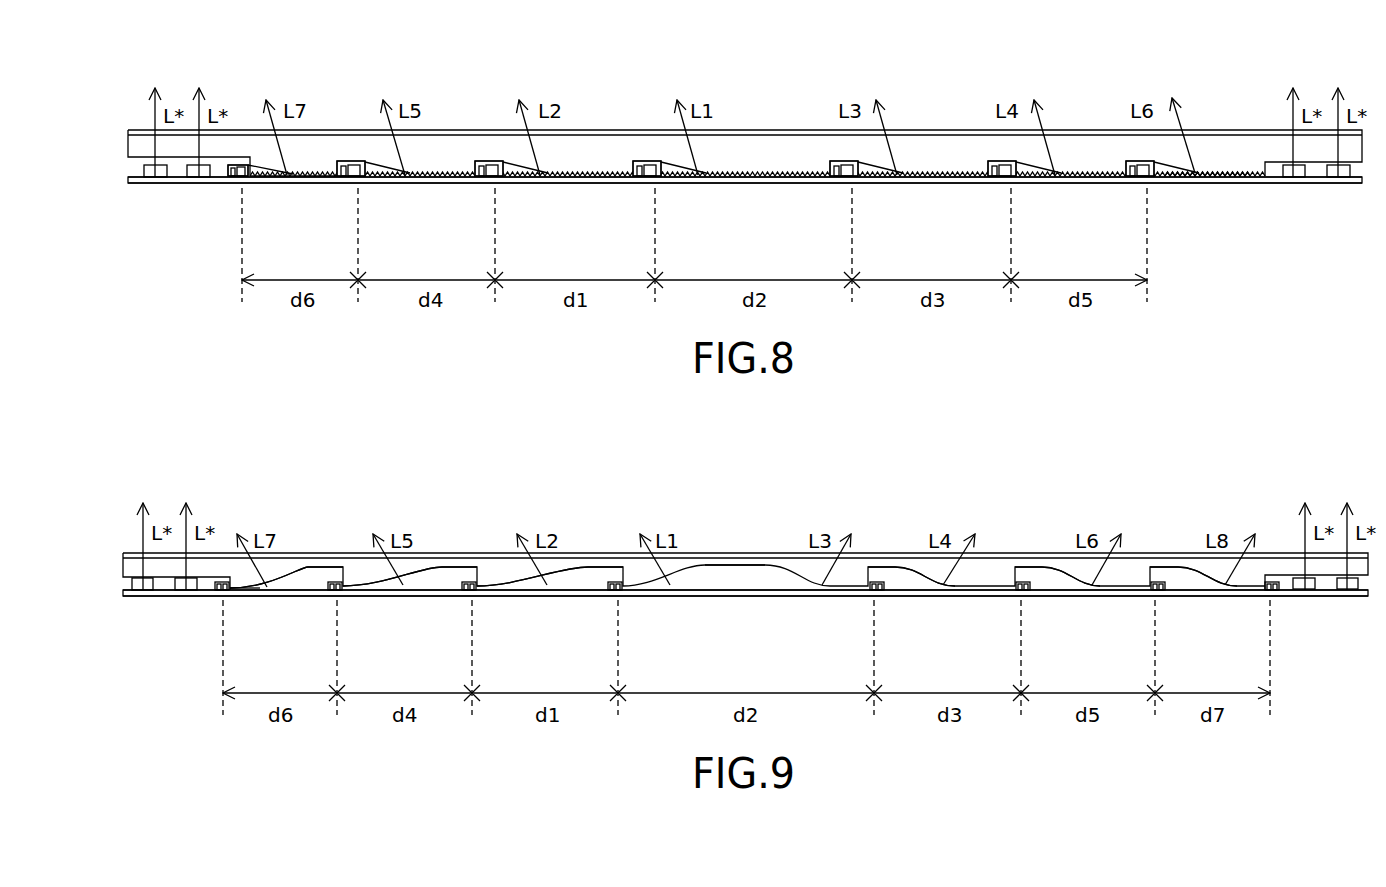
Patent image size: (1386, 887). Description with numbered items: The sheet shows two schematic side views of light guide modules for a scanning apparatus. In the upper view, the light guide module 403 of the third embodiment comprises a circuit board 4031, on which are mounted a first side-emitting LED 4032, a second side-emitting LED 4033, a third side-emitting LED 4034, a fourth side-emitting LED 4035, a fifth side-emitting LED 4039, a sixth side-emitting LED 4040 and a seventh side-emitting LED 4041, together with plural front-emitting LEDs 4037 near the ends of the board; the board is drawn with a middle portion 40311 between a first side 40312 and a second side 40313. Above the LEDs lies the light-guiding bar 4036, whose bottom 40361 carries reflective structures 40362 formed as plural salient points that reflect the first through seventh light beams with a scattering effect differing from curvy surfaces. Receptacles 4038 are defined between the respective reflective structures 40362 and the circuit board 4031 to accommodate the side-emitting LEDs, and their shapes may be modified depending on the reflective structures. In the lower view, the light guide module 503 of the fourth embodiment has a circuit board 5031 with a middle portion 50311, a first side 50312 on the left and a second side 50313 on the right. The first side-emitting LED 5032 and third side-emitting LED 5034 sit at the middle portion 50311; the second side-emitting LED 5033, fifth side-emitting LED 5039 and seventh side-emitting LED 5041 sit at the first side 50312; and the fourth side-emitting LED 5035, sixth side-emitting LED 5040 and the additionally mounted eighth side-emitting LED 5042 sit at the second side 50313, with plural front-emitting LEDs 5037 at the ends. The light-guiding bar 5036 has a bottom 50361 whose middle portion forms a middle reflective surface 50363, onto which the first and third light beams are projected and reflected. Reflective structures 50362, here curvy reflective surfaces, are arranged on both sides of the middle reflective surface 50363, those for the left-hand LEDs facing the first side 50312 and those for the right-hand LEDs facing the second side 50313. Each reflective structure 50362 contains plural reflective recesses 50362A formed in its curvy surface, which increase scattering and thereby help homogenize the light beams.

In FIG. 8, the light guide module 403 is at (1240, 68).
In FIG. 8, the circuit board 4031 is at (1225, 181).
In FIG. 8, the middle portion of substrate 40311 is at (695, 181).
In FIG. 8, the first end portion of substrate 40312 is at (205, 184).
In FIG. 8, the second end portion of substrate 40313 is at (1273, 181).
In FIG. 8, the first side-emitting LED 4032 is at (665, 177).
In FIG. 8, the second side-emitting LED 4033 is at (508, 177).
In FIG. 8, the third side-emitting LED 4034 is at (862, 177).
In FIG. 8, the fourth side-emitting LED 4035 is at (1020, 177).
In FIG. 8, the light-guiding bar 4036 is at (719, 143).
In FIG. 8, the bottom 40361 is at (318, 168).
In FIG. 8, the reflective structures 40362 is at (270, 181).
In FIG. 8, the front-emitting LEDs 4037 is at (195, 178).
In FIG. 8, the receptacles 4038 is at (340, 178).
In FIG. 8, the fifth side-emitting LED 4039 is at (372, 177).
In FIG. 8, the sixth side-emitting LED 4040 is at (1158, 177).
In FIG. 8, the seventh side-emitting LED 4041 is at (250, 177).
In FIG. 9, the light guide module 503 is at (1240, 490).
In FIG. 9, the circuit board 5031 is at (797, 594).
In FIG. 9, the middle portion 50311 is at (748, 594).
In FIG. 9, the first side 50312 is at (210, 597).
In FIG. 9, the second side 50313 is at (1293, 596).
In FIG. 9, the first side-emitting LED 5032 is at (630, 591).
In FIG. 9, the second side-emitting LED 5033 is at (484, 591).
In FIG. 9, the third side-emitting LED 5034 is at (866, 592).
In FIG. 9, the fourth side-emitting LED 5035 is at (1012, 592).
In FIG. 9, the light-guiding bar 5036 is at (704, 556).
In FIG. 9, the bottom 50361 is at (238, 578).
In FIG. 9, the reflective structures 50362 is at (287, 594).
In FIG. 9, the reflective recesses 50362A is at (312, 568).
In FIG. 9, the middle reflective surface 50363 is at (707, 594).
In FIG. 9, the front-emitting LEDs 5037 is at (182, 591).
In FIG. 9, the fifth side-emitting LED 5039 is at (352, 591).
In FIG. 9, the sixth side-emitting LED 5040 is at (1146, 592).
In FIG. 9, the seventh side-emitting LED 5041 is at (233, 591).
In FIG. 9, the eighth side-emitting LED 5042 is at (1257, 592).